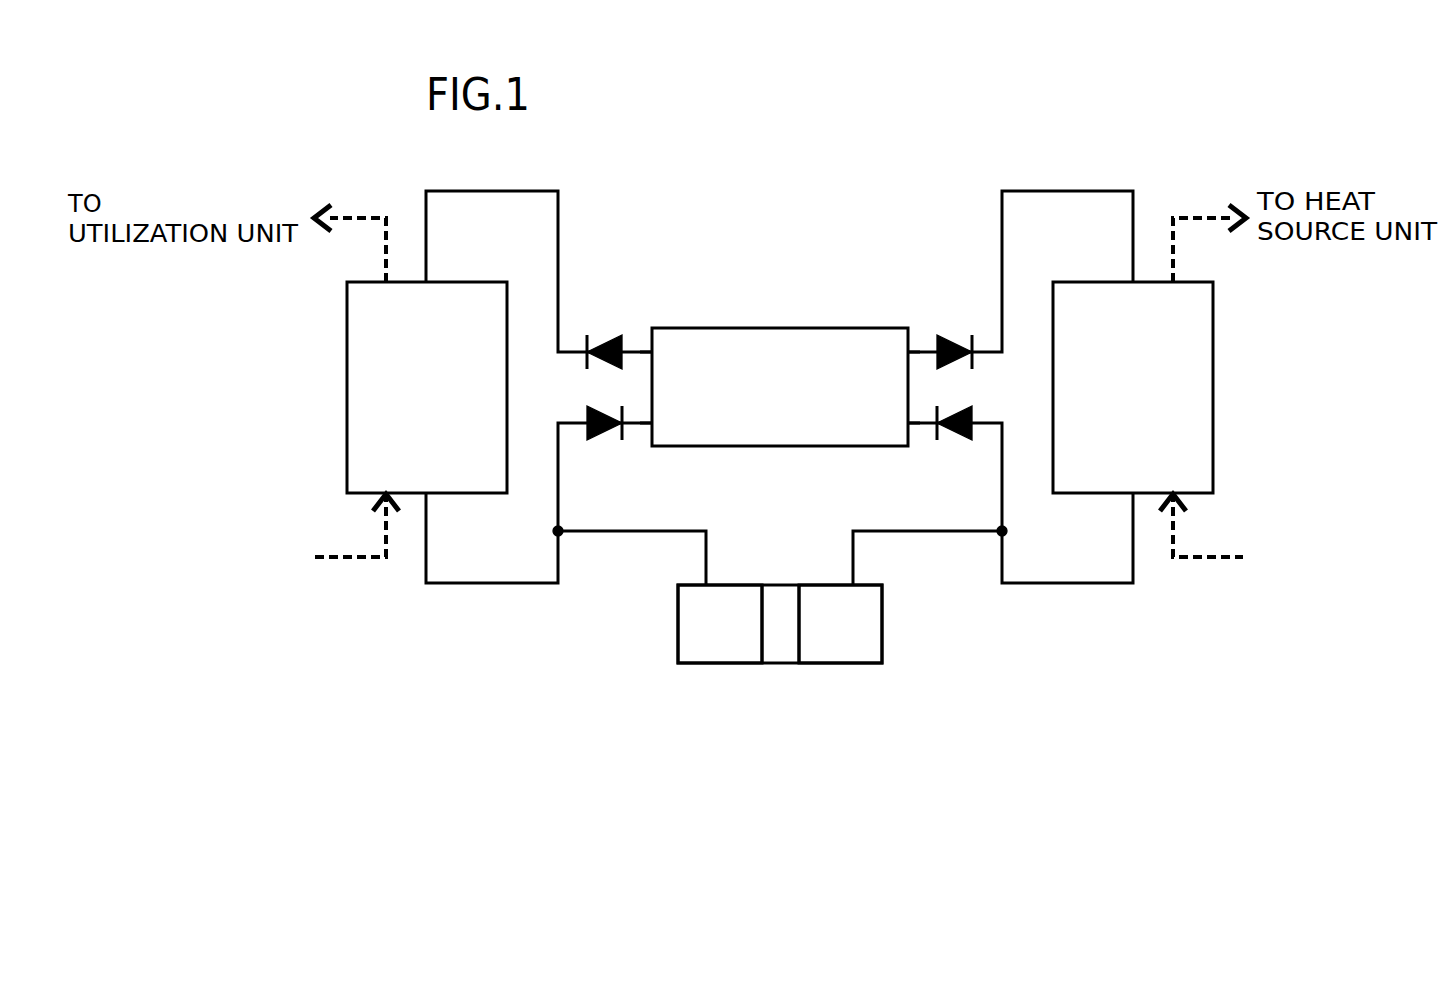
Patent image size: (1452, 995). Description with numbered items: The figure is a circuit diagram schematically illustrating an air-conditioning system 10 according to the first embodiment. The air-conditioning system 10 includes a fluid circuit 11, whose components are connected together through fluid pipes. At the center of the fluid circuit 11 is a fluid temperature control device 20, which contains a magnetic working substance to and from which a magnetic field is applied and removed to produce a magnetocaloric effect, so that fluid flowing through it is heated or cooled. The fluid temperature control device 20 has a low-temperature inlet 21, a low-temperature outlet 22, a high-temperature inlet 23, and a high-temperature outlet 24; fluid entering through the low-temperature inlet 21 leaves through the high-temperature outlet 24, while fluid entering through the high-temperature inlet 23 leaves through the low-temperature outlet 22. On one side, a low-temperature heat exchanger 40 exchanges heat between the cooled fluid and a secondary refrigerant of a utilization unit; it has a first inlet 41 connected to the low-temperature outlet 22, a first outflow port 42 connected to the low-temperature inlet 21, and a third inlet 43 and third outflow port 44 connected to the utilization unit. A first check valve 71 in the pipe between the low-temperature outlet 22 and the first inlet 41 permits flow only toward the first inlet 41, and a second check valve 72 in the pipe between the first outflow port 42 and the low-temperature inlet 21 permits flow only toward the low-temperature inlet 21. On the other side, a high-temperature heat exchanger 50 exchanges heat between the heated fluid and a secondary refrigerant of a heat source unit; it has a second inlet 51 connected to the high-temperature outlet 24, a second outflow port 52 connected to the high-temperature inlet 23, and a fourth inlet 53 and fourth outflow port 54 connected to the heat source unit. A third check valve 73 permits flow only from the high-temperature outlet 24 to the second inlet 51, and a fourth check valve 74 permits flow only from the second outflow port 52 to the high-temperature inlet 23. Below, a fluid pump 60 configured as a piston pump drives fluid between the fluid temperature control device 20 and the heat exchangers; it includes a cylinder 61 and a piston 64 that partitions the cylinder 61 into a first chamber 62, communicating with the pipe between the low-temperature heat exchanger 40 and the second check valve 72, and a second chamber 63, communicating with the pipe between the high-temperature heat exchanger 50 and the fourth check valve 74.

The air-conditioning system 10 is at (858, 168).
The fluid circuit 11 is at (785, 270).
The fluid temperature control device 20 is at (760, 326).
The low-temperature inlet 21 is at (652, 444).
The low-temperature outlet 22 is at (650, 332).
The high-temperature inlet 23 is at (908, 445).
The high-temperature outlet 24 is at (910, 350).
The low-temperature heat exchanger 40 is at (345, 378).
The first inlet 41 is at (430, 280).
The first outflow port 42 is at (430, 495).
The third inlet 43 is at (385, 495).
The third outflow port 44 is at (385, 280).
The high-temperature heat exchanger 50 is at (1215, 378).
The second inlet 51 is at (1130, 280).
The second outflow port 52 is at (1130, 495).
The fourth inlet 53 is at (1175, 495).
The fourth outflow port 54 is at (1175, 280).
The fluid pump 60 is at (852, 665).
The cylinder 61 is at (677, 627).
The first chamber 62 is at (724, 657).
The second chamber 63 is at (873, 613).
The piston 64 is at (771, 597).
The first check valve 71 is at (611, 343).
The second check valve 72 is at (605, 436).
The third check valve 73 is at (952, 345).
The fourth check valve 74 is at (957, 436).